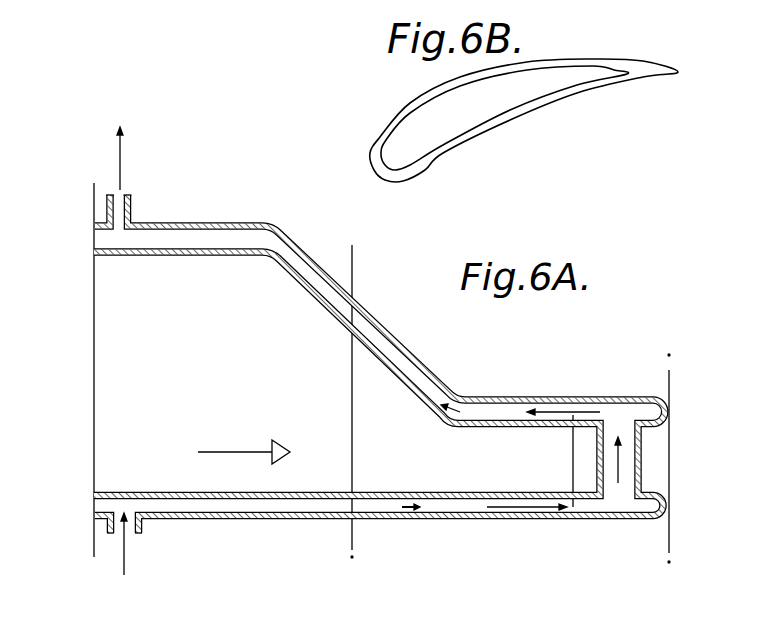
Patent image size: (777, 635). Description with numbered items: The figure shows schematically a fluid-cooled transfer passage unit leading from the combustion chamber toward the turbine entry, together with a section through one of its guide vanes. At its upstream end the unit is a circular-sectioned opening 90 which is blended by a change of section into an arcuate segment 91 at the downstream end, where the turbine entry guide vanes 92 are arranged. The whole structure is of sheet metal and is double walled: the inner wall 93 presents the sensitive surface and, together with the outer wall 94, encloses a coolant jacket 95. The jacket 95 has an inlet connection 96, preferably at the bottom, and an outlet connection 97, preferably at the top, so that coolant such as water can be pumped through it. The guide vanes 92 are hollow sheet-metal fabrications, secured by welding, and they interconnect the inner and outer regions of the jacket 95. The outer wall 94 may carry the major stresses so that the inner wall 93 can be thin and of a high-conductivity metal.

In FIG. 6A, the circular-sectioned opening 90 is at (86, 296).
In FIG. 6A, the arcuate segment 91 is at (496, 437).
In FIG. 6A, the turbine entry guide vanes 92 is at (640, 458).
In FIG. 6B, the turbine entry guide vanes 92 is at (445, 147).
In FIG. 6A, the inner wall 93 is at (225, 255).
In FIG. 6A, the outer wall 94 is at (260, 187).
In FIG. 6A, the coolant jacket 95 is at (190, 238).
In FIG. 6A, the inlet connection 96 is at (142, 527).
In FIG. 6A, the outlet connection 97 is at (125, 192).